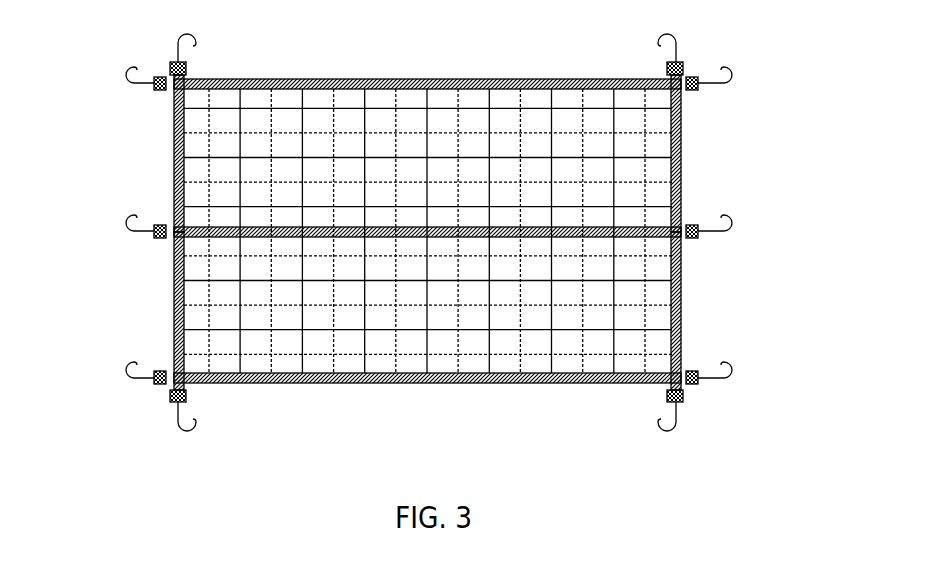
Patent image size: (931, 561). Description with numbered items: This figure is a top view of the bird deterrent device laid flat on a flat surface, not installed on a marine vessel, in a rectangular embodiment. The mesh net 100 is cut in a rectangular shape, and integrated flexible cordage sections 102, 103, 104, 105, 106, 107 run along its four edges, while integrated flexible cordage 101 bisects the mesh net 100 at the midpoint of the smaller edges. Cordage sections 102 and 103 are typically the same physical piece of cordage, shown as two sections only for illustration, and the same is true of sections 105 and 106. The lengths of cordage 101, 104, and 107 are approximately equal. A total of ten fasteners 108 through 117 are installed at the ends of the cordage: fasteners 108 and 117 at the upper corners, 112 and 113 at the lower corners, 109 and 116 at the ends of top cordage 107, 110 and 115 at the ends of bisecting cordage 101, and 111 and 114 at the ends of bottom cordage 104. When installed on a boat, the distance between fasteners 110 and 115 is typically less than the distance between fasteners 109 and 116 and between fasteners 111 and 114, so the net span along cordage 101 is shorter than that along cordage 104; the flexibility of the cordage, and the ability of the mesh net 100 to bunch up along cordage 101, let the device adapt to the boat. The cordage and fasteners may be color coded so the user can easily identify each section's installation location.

The mesh net 100 is at (408, 115).
The integrated flexible cordage 101 is at (495, 227).
The integrated flexible cordage section 102 is at (682, 150).
The integrated flexible cordage section 103 is at (682, 305).
The integrated flexible cordage section 104 is at (533, 380).
The integrated flexible cordage section 105 is at (175, 307).
The integrated flexible cordage section 106 is at (175, 165).
The integrated flexible cordage section 107 is at (350, 82).
The fastener 108 is at (677, 43).
The fastener 109 is at (733, 73).
The fastener 110 is at (733, 221).
The fastener 111 is at (733, 368).
The fastener 112 is at (677, 420).
The fastener 113 is at (178, 413).
The fastener 114 is at (126, 370).
The fastener 115 is at (126, 223).
The fastener 116 is at (126, 75).
The fastener 117 is at (178, 43).